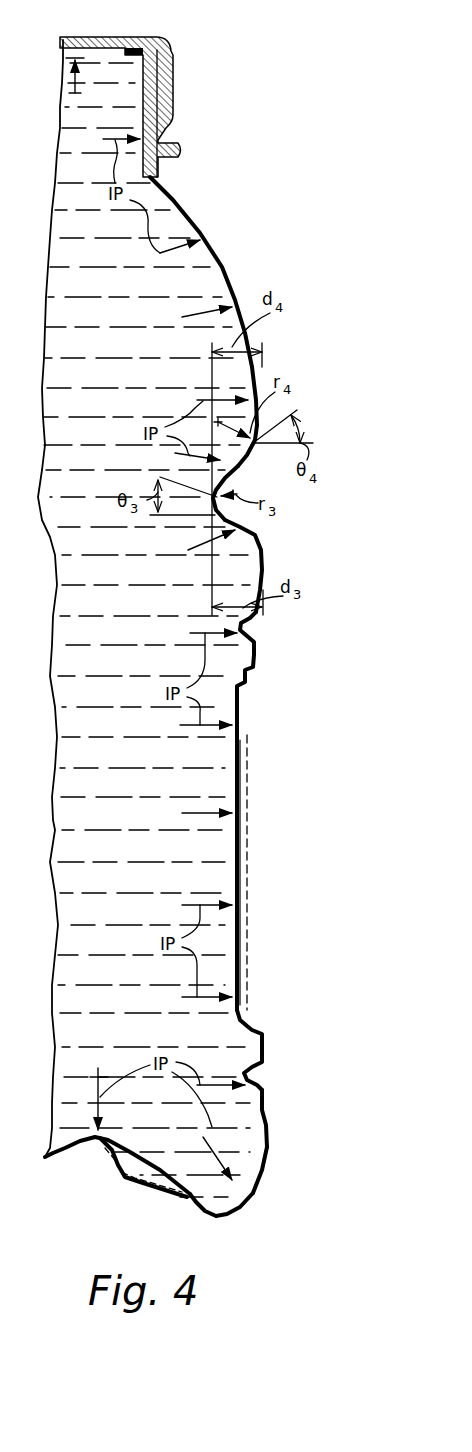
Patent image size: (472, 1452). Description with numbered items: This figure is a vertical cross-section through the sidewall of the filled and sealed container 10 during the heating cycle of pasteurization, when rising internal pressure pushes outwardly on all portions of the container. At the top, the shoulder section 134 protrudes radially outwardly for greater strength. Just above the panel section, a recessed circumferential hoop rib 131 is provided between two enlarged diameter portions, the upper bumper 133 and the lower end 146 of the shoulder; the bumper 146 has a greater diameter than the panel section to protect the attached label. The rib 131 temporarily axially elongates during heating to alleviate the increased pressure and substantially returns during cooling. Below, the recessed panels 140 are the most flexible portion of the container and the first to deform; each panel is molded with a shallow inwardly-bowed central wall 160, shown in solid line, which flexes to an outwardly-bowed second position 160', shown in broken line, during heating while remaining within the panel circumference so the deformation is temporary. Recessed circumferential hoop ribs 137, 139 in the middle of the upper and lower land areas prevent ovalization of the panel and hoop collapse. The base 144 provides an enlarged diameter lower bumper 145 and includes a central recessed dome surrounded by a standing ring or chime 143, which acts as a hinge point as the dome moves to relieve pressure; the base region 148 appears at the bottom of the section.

The container with closure 10 is at (176, 63).
The shoulder section 134 is at (218, 250).
The upper bumper 133 is at (257, 443).
The recessed circumferential hoop rib 131 is at (225, 486).
The lower end of shoulder (bumper) 146 is at (257, 534).
The recessed circumferential hoop rib 137 is at (252, 628).
The recessed panel 140 is at (241, 745).
The central wall 160 is at (280, 872).
The outwardly-bowed second position 160' is at (287, 872).
The recessed circumferential hoop rib 139 is at (258, 1078).
The lower bumper 145 is at (268, 1131).
The base 144 is at (270, 1152).
The standing ring or chime 143 is at (226, 1214).
The base push-up 148 is at (130, 1180).